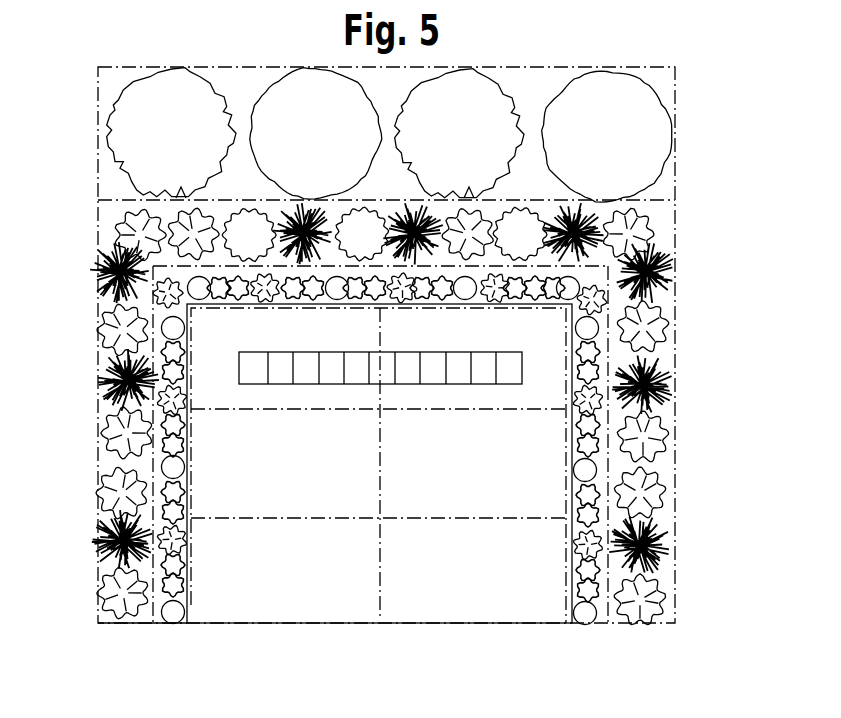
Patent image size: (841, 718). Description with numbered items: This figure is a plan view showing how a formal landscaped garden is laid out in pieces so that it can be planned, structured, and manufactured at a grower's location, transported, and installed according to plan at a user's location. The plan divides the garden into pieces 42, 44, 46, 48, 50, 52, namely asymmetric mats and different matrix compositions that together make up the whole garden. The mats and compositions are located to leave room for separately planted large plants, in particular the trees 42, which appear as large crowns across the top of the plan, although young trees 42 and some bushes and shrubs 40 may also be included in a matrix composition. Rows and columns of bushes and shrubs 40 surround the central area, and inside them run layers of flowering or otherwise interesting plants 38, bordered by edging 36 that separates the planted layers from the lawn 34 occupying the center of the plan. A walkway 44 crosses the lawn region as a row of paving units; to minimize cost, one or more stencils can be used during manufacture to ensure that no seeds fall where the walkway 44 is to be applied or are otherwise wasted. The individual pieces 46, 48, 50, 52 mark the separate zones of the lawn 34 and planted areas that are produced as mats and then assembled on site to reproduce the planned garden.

The lawn 34 is at (525, 577).
The edging 36 is at (565, 623).
The layers of flowering or otherwise interesting plants 38 is at (600, 623).
The bushes and shrubs 40 is at (660, 440).
The trees 42 is at (623, 138).
The walkway 44 is at (330, 380).
The piece 46 is at (237, 462).
The piece 48 is at (473, 473).
The piece 50 is at (533, 332).
The piece 52 is at (253, 332).